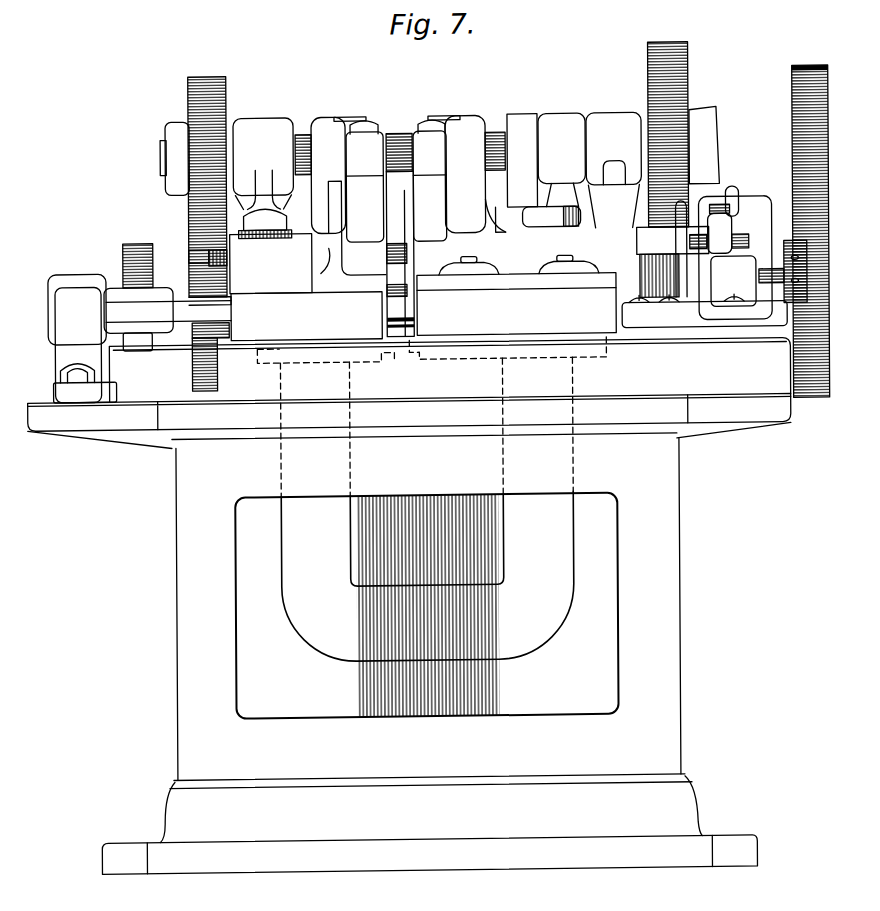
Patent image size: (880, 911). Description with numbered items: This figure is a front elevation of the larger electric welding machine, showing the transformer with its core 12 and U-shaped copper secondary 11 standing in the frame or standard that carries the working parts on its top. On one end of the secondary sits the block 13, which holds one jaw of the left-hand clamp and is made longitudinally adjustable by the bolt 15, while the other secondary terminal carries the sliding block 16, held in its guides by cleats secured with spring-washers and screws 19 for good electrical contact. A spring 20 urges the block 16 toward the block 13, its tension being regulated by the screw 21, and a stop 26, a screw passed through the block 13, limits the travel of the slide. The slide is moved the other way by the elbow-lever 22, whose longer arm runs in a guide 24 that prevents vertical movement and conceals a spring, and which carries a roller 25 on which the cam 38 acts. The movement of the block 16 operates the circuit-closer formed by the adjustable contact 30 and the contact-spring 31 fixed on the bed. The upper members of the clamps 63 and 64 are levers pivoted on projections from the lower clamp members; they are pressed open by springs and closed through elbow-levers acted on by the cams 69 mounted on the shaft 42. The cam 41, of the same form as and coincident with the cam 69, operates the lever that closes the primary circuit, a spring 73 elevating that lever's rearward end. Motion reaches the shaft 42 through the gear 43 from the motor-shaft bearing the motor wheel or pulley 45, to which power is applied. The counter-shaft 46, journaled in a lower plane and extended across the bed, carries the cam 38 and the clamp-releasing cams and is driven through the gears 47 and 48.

The secondary 11 is at (289, 545).
The core 12 is at (363, 684).
The block 13 is at (306, 287).
The bolt 15 is at (269, 214).
The block 16 is at (540, 272).
The spring-washers and screws 19 is at (488, 271).
The spring 20 is at (660, 272).
The screw 21 is at (785, 297).
The elbow-lever 22 is at (189, 314).
The guide 24 is at (63, 341).
The roller 25 is at (133, 285).
The stop 26 is at (191, 256).
The adjustable contact 30 is at (750, 243).
The contact-spring 31 is at (690, 218).
The cam 38 is at (142, 244).
The cam 41 is at (527, 118).
The shaft 42 is at (397, 133).
The gear 43 is at (690, 67).
The motor wheel or pulley 45 is at (801, 68).
The counter-shaft 46 is at (395, 290).
The gear 47 is at (190, 84).
The gear 48 is at (193, 378).
The clamp upper member 63 is at (339, 187).
The clamp upper member 64 is at (459, 185).
The cam 69 is at (366, 118).
The spring 73 is at (498, 222).